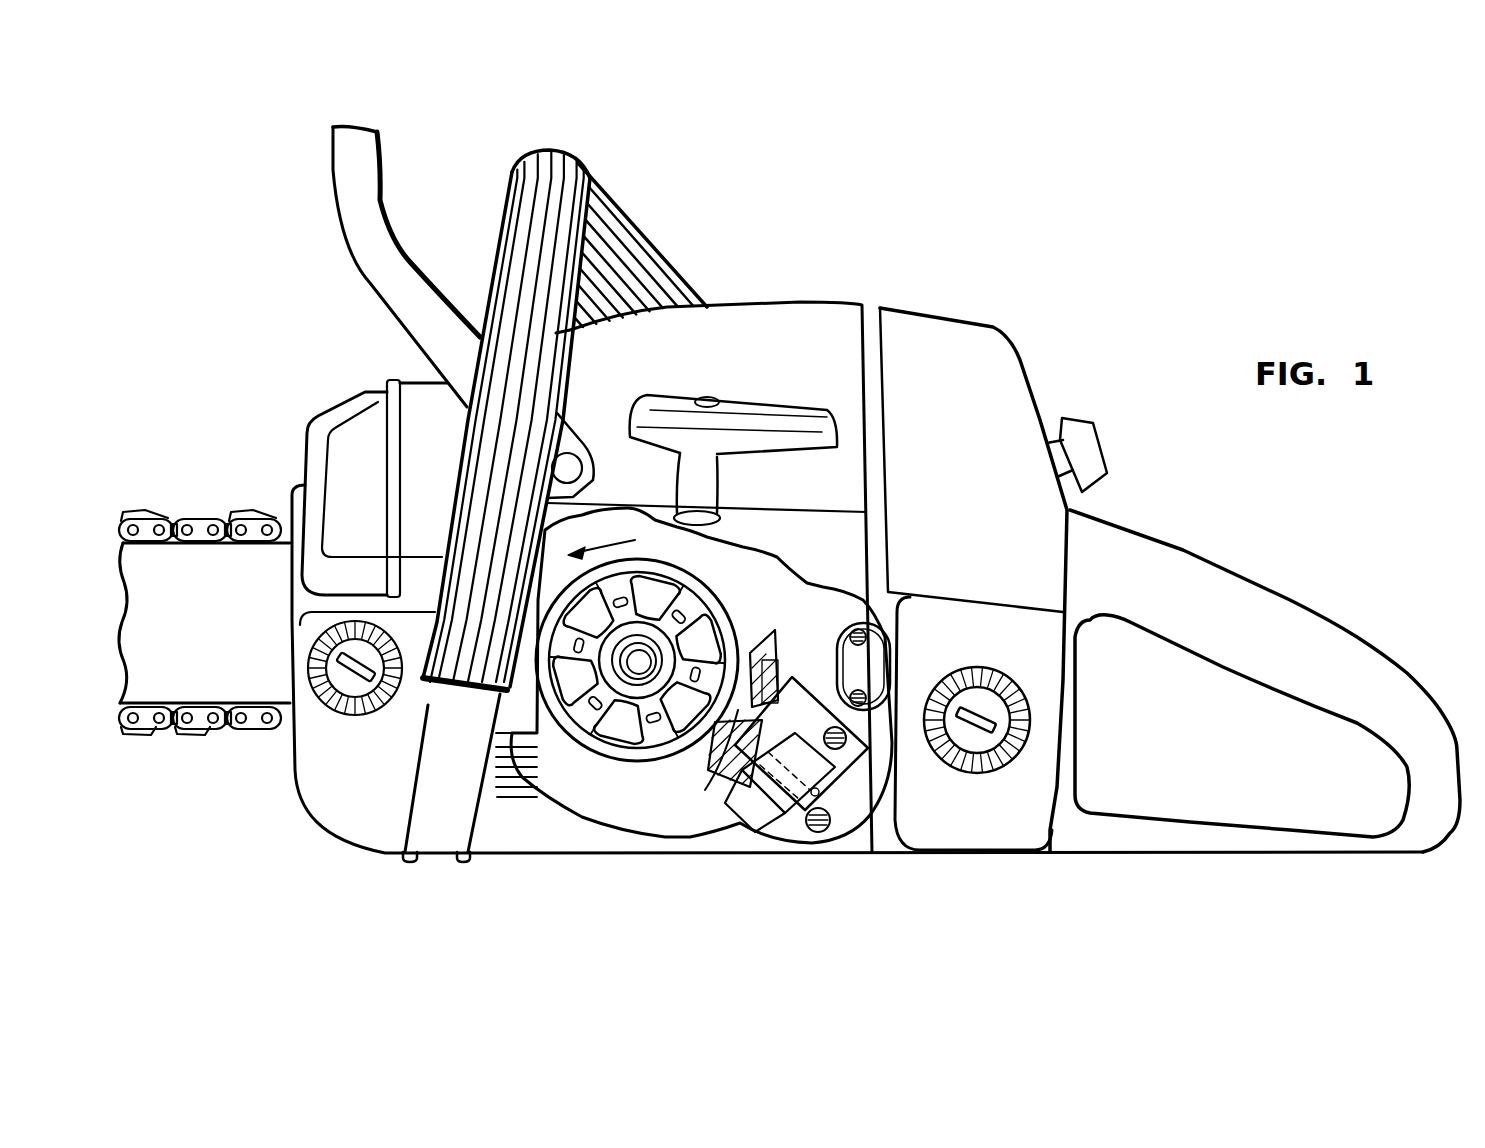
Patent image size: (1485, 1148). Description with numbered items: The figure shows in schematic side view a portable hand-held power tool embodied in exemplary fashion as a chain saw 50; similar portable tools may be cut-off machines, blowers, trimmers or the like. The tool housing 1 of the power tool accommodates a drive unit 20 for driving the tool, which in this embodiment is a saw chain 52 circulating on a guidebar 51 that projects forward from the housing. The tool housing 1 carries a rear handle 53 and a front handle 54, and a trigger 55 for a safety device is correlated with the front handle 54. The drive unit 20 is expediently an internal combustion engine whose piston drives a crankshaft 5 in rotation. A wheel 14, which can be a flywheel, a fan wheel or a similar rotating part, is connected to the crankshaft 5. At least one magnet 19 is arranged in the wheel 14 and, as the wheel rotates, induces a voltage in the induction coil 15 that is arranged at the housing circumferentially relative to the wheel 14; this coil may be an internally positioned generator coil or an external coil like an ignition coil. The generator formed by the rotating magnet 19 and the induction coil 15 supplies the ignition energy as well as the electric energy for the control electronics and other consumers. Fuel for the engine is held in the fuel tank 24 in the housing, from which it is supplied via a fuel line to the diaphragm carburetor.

The tool housing 1 is at (737, 340).
The crankshaft 5 is at (637, 660).
The wheel 14 is at (637, 787).
The induction coil 15 is at (757, 810).
The magnet 19 is at (737, 763).
The drive unit 20 is at (721, 629).
The fuel tank 24 is at (960, 810).
The chain saw 50 is at (935, 255).
The guidebar 51 is at (162, 607).
The saw chain 52 is at (150, 723).
The rear handle 53 is at (1220, 598).
The front handle 54 is at (607, 240).
The trigger 55 is at (370, 217).